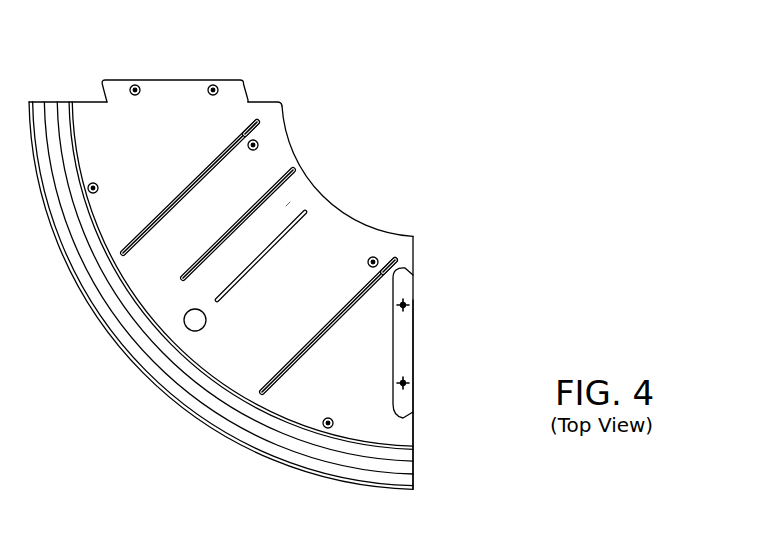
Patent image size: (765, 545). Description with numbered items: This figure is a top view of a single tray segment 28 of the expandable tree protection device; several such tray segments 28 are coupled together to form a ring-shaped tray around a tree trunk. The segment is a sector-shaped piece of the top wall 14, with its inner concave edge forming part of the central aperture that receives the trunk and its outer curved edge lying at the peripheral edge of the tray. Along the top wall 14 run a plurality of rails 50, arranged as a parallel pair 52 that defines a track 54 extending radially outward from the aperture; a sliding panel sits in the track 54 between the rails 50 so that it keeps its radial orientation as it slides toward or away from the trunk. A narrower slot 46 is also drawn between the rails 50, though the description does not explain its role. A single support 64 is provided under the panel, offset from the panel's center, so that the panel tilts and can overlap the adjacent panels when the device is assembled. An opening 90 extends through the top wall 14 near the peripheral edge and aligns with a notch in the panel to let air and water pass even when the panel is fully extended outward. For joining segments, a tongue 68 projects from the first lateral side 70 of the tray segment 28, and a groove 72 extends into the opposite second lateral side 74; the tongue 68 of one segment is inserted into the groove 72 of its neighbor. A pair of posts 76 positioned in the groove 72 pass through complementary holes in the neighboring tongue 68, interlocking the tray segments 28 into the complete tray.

The top wall 14 is at (345, 232).
The tray segment 28 is at (318, 116).
The narrow slot 46 is at (267, 253).
The rail 50 is at (158, 215).
The parallel pair of rails 52 is at (264, 106).
The track 54 is at (300, 194).
The support 64 is at (240, 226).
The tongue 68 is at (173, 80).
The first lateral side 70 is at (78, 101).
The groove 72 is at (405, 333).
The second lateral side 74 is at (414, 428).
The post 76 is at (406, 304).
The opening 90 is at (190, 327).